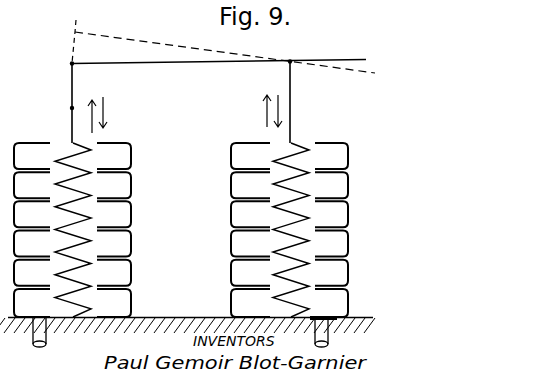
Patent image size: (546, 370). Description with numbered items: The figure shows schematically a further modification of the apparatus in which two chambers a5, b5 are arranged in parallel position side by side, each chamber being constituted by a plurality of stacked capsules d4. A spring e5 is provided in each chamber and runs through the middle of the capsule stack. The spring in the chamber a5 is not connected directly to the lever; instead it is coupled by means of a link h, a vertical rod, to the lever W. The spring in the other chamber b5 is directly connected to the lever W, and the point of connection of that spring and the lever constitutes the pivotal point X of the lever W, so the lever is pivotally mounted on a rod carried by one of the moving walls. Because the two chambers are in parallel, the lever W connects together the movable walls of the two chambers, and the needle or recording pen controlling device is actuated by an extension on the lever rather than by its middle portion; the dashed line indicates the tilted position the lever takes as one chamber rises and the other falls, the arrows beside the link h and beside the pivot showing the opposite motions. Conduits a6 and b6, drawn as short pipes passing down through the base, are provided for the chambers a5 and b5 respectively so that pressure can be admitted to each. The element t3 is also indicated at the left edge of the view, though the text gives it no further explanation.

The lever W is at (223, 54).
The pivotal point X is at (294, 93).
The link h is at (70, 87).
The support member t3 is at (6, 123).
The chamber a5 is at (118, 161).
The chamber b5 is at (335, 152).
The capsules d4 is at (118, 222).
The springs e5 is at (82, 233).
The conduit a6 is at (33, 342).
The conduit b6 is at (328, 321).